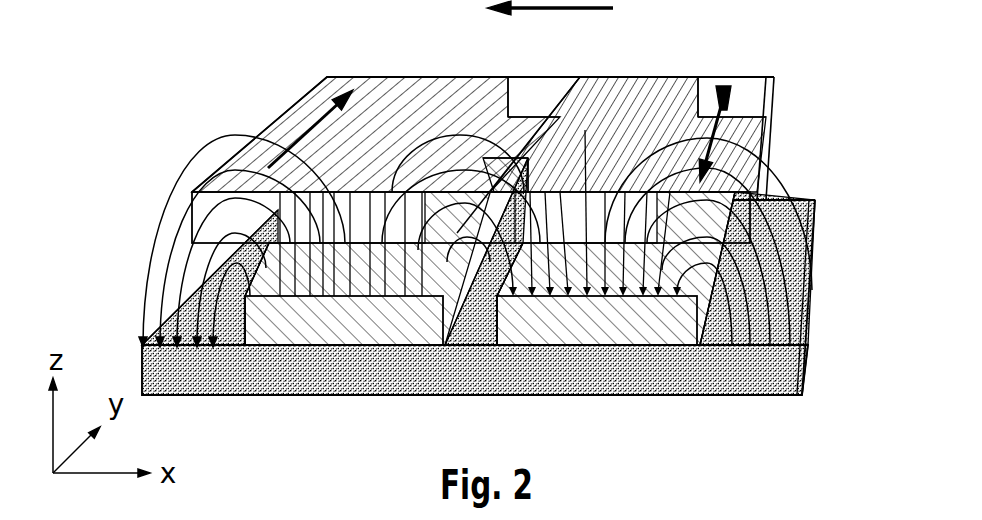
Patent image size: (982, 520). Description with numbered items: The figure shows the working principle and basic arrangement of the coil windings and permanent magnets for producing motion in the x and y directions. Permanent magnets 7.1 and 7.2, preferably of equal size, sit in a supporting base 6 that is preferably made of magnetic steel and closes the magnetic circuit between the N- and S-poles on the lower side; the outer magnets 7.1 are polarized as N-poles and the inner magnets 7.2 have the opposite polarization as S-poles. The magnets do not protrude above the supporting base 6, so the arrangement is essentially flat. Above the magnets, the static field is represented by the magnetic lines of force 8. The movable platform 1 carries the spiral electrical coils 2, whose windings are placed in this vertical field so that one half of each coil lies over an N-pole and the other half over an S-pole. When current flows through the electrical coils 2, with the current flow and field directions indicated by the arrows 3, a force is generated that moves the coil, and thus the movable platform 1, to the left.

The movable platform 1 is at (763, 117).
The electrical coils 2 is at (387, 66).
The magnetization direction arrows 3 is at (312, 128).
The supporting base 6 is at (780, 373).
The outer permanent magnets 7.1 is at (275, 328).
The inner permanent magnets 7.2 is at (542, 330).
The magnetic lines of force 8 is at (790, 180).